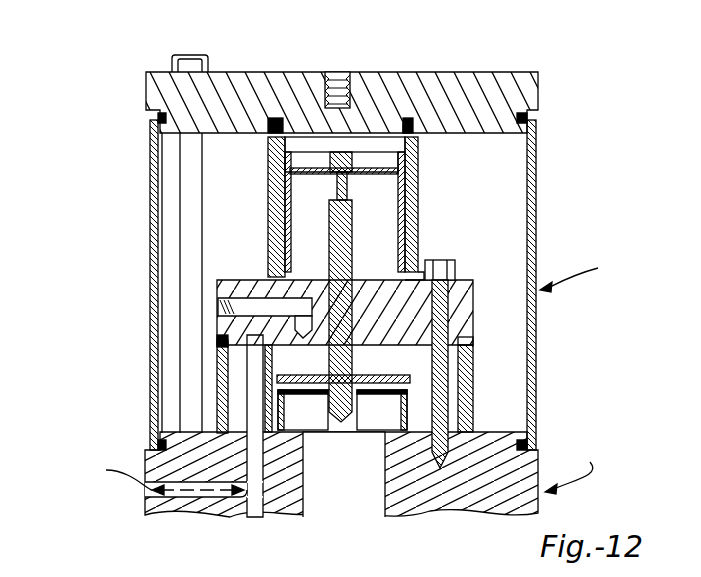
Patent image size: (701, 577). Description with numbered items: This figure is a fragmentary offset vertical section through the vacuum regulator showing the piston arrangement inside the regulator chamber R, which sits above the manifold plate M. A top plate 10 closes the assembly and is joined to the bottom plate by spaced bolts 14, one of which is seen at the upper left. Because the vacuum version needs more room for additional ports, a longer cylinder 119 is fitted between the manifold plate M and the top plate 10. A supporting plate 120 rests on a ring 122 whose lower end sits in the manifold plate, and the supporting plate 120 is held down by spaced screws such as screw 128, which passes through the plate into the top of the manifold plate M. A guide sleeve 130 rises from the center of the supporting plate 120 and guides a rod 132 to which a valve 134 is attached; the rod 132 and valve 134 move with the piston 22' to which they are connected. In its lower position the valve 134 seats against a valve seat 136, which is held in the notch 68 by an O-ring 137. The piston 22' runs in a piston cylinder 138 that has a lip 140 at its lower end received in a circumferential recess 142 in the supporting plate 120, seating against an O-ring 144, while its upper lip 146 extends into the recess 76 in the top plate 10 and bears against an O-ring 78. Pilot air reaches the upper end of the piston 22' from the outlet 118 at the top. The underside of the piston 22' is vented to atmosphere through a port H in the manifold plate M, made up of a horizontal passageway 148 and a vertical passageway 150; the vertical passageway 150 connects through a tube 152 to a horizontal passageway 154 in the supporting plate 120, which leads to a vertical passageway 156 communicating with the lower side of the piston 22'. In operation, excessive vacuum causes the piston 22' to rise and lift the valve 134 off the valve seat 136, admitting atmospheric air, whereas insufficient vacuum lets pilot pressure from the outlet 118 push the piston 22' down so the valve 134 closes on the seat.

The top plate 10 is at (392, 82).
The bolts 14 is at (184, 55).
The piston 22' is at (345, 168).
The circumferential recess 68 is at (300, 476).
The circumferential recess 76 is at (274, 118).
The O-ring 78 is at (409, 118).
The outlet 118 is at (330, 100).
The cylinder 119 is at (150, 241).
The supporting plate 120 is at (474, 300).
The ring 122 is at (474, 366).
The screw 128 is at (452, 268).
The guide sleeve 130 is at (353, 218).
The rod 132 is at (352, 360).
The valve 134 is at (325, 394).
The valve seat 136 is at (403, 394).
The O-ring 137 is at (368, 440).
The piston cylinder 138 is at (418, 186).
The lip 140 is at (268, 276).
The circumferential recess 142 is at (289, 274).
The O-ring 144 is at (262, 296).
The lip 146 is at (410, 128).
The horizontal passageway 148 is at (243, 505).
The vertical passageway 150 is at (262, 478).
The tube 152 is at (243, 394).
The horizontal passageway 154 is at (226, 334).
The vertical passageway 156 is at (360, 348).
The regulator chamber R is at (569, 267).
The manifold plate M is at (569, 470).
The port H is at (116, 474).